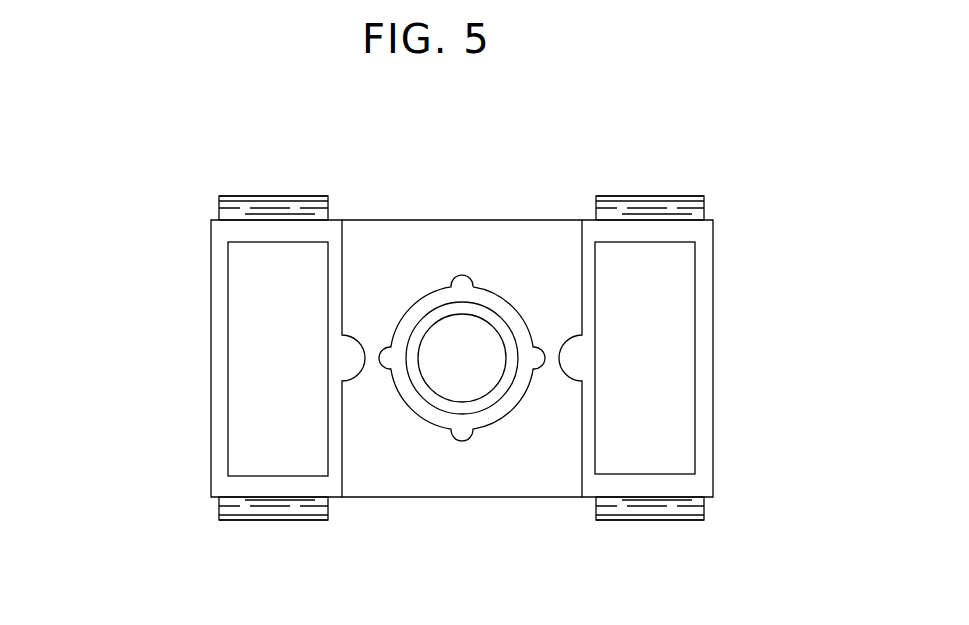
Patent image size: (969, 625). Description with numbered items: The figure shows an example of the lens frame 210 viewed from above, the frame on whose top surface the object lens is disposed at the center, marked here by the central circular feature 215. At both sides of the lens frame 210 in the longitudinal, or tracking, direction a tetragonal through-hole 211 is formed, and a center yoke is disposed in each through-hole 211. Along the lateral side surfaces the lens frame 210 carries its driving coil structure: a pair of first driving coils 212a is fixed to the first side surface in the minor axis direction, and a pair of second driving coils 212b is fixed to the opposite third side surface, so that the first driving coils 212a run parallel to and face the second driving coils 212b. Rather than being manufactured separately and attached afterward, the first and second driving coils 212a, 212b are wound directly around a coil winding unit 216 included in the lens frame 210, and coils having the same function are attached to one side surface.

The lens frame 210 is at (733, 157).
The tetragonal through-hole 211 is at (298, 374).
The first driving coils 212a is at (219, 208).
The second driving coils 212b is at (219, 507).
The vent / terminal portion 215 is at (442, 375).
The coil winding unit 216 is at (271, 196).